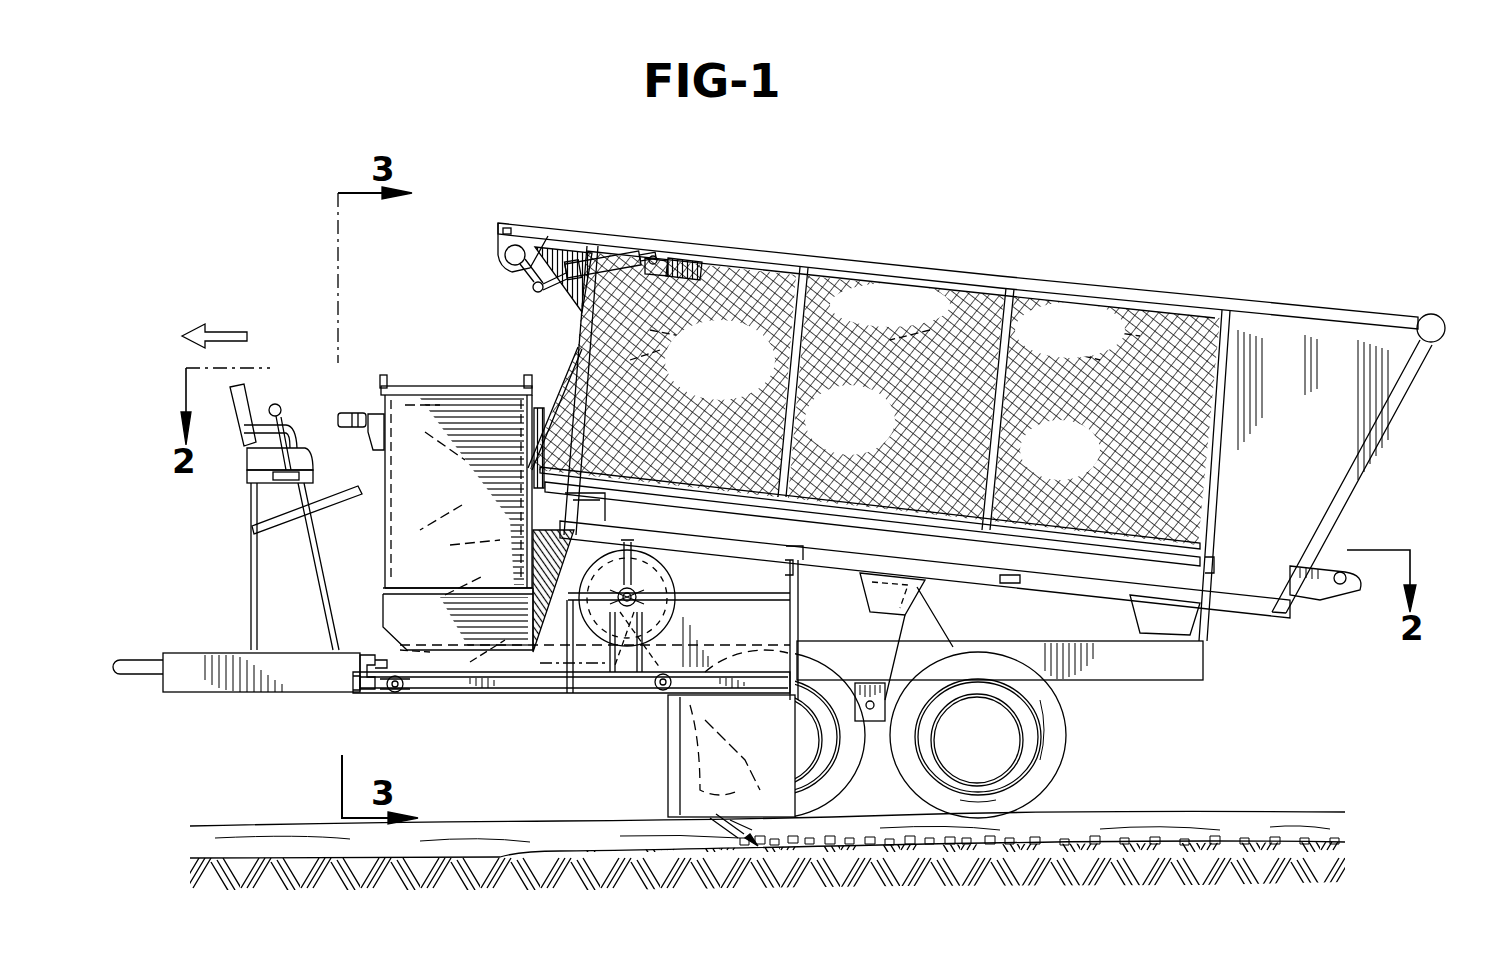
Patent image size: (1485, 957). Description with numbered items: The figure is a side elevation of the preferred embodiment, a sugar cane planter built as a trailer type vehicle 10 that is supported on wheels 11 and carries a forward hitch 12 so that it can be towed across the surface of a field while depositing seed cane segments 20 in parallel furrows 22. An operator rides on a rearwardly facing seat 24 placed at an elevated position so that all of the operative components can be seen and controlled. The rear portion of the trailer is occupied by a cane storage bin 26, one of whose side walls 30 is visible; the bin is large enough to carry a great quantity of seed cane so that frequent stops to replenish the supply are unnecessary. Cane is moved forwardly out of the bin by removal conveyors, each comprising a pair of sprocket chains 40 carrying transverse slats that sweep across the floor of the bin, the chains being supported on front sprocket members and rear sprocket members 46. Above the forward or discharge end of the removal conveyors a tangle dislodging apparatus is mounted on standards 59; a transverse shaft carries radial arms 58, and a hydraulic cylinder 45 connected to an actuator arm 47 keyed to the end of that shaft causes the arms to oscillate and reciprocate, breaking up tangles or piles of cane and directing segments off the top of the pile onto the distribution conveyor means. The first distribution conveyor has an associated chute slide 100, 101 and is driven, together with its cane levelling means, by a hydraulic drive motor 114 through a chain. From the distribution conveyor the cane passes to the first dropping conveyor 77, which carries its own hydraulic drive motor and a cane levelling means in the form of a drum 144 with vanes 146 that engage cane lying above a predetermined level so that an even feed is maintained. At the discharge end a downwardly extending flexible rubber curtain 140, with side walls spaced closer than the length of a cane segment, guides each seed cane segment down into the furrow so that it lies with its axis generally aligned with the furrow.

The trailer type vehicle 10 is at (280, 240).
The wheels 11 is at (1056, 735).
The forward hitch 12 is at (142, 662).
The seed cane segments 20 is at (1082, 830).
The furrows 22 is at (298, 825).
The seat 24 is at (250, 476).
The cane storage bin 26 is at (972, 290).
The side wall 30 is at (959, 408).
The sprocket chains 40 is at (604, 500).
The hydraulic cylinder 45 is at (610, 242).
The rear sprocket members 46 is at (1335, 560).
The actuator arm 47 is at (525, 283).
The radial arms 58 is at (570, 312).
The standards 59 is at (542, 238).
The first dropping conveyor 77 is at (525, 690).
The chute slide 100 is at (462, 485).
The chute slide 101 is at (458, 625).
The hydraulic drive motor 114 is at (355, 413).
The flexible rubber curtain 140 is at (678, 748).
The drum 144 is at (652, 575).
The vanes 146 is at (624, 556).